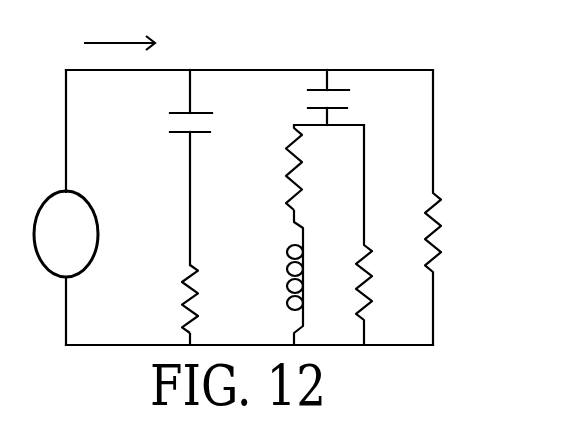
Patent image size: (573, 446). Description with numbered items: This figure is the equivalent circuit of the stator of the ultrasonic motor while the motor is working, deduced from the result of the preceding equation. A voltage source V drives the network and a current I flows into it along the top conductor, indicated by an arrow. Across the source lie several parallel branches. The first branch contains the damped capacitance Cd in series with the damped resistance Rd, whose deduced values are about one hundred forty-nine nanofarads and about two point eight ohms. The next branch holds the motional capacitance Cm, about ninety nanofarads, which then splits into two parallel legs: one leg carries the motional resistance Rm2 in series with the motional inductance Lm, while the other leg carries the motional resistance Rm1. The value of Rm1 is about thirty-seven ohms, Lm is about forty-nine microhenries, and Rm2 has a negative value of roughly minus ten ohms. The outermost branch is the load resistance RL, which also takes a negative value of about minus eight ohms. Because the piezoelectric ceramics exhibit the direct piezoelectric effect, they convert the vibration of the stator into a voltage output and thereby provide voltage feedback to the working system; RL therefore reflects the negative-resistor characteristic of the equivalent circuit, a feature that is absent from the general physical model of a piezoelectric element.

The current I is at (119, 25).
The voltmeter / voltage source V is at (66, 234).
The damped capacitance Cd is at (168, 167).
The damped resistance Rd is at (161, 305).
The motional capacitance Cm is at (312, 97).
The motional resistance Rm2 is at (266, 167).
The motional inductance Lm is at (268, 277).
The motional resistance Rm1 is at (387, 235).
The load resistance RL is at (452, 207).